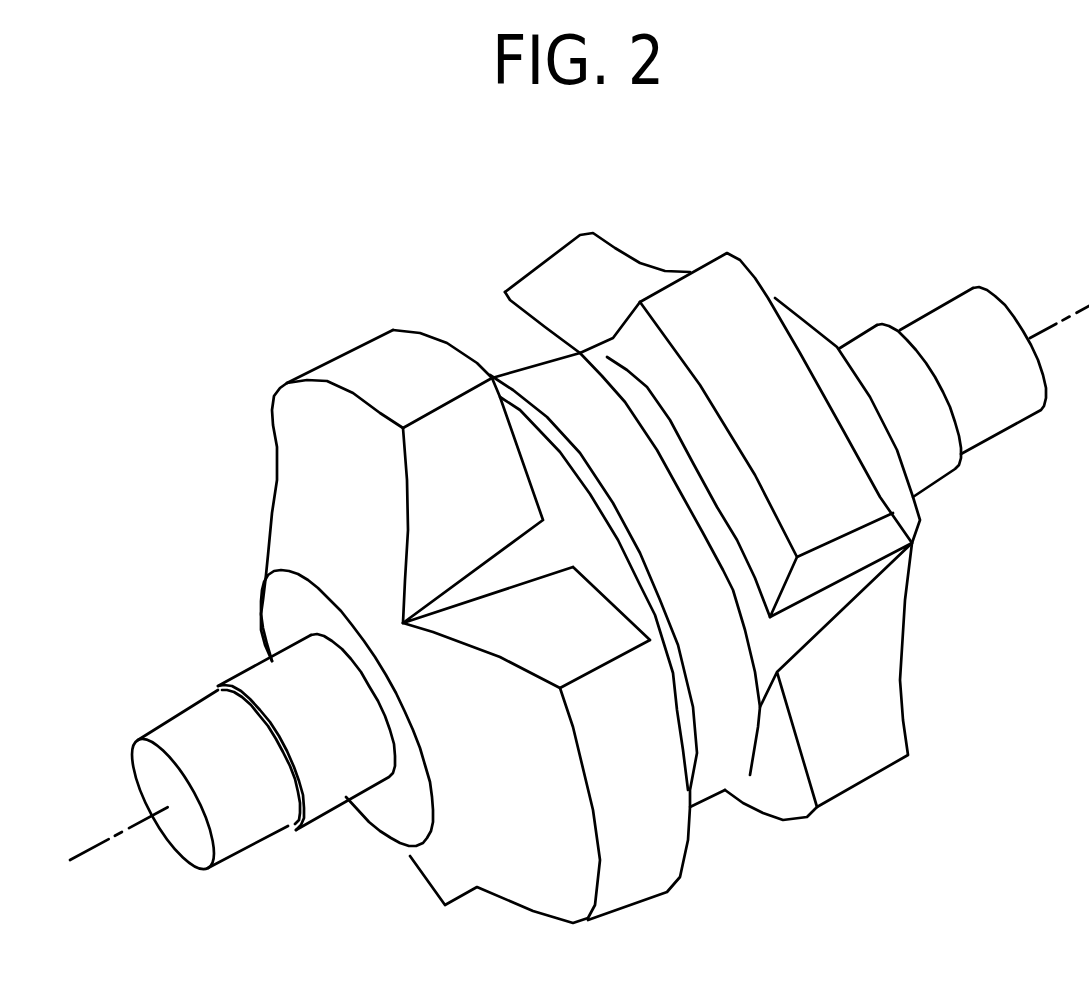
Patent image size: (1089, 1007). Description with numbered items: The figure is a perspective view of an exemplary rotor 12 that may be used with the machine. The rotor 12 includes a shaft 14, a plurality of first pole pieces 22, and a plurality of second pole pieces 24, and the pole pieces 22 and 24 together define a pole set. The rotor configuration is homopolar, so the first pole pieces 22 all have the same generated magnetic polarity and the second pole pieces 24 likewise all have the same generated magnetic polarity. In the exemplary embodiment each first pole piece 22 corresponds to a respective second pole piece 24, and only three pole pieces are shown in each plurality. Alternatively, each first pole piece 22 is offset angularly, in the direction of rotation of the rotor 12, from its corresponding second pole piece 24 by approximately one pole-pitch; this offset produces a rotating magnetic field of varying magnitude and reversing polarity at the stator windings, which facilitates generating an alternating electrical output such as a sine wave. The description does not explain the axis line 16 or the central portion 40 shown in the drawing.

The rotor 12 is at (552, 554).
The shaft 14 is at (242, 817).
The axis of rotation 16 is at (93, 850).
The first pole pieces 22 is at (318, 357).
The second pole pieces 24 is at (518, 264).
The hub 40 is at (723, 746).